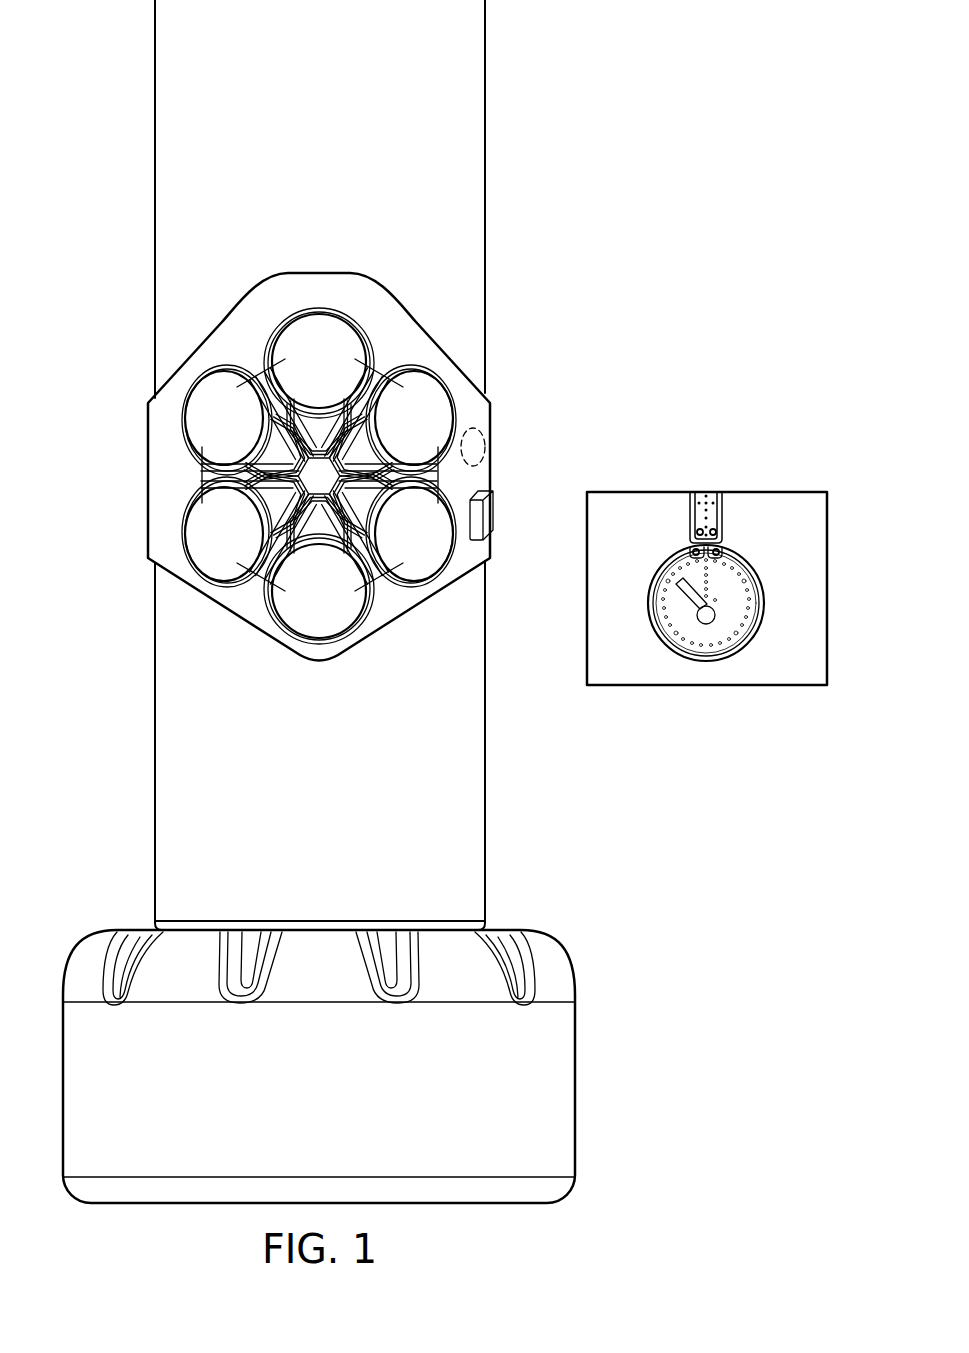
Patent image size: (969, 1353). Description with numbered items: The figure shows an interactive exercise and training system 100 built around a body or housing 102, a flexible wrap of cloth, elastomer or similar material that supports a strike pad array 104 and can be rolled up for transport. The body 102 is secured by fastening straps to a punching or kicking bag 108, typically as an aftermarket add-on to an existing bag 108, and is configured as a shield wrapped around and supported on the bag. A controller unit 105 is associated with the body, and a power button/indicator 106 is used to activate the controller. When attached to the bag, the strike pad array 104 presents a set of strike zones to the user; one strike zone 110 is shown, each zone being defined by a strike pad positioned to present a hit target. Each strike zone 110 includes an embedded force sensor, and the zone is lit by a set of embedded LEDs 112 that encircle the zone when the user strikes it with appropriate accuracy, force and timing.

The interactive exercise and training system 100 is at (84, 62).
The body or housing 102 is at (157, 478).
The strike pad array 104 is at (319, 335).
The controller unit 105 is at (486, 522).
The power button/indicator 106 is at (479, 447).
The punching or kicking bag 108 is at (159, 1148).
The strike zone 110 is at (747, 604).
The embedded LEDs 112 is at (738, 570).